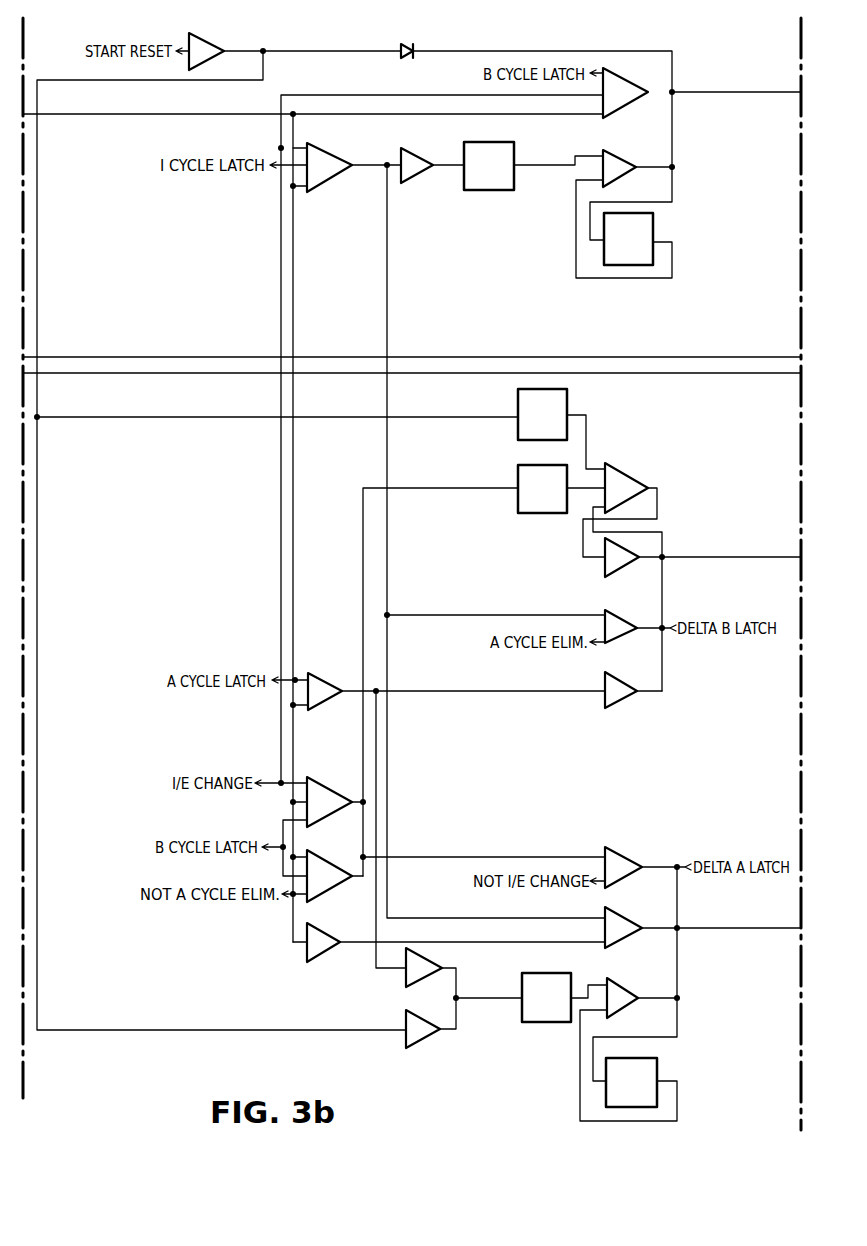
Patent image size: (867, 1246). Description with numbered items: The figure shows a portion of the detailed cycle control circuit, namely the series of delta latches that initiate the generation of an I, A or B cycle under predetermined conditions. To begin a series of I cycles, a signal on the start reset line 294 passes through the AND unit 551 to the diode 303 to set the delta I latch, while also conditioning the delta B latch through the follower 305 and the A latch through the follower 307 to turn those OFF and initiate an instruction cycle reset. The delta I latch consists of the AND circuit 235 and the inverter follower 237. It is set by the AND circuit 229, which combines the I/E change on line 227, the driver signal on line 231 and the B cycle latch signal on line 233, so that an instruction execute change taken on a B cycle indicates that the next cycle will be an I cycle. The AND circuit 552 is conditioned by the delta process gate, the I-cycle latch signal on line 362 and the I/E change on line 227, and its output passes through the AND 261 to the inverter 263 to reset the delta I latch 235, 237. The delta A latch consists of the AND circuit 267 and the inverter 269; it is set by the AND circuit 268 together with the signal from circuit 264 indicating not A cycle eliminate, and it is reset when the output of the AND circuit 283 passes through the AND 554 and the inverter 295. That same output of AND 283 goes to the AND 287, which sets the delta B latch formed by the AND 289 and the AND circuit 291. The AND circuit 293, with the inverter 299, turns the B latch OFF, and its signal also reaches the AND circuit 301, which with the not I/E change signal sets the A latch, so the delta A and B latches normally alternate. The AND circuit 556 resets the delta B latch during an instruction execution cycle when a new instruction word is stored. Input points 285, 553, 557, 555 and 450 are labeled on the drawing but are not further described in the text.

The start reset line 294 is at (181, 50).
The AND unit 551 is at (200, 46).
The diode 303 is at (403, 47).
The B cycle latch line 233 is at (594, 72).
The AND circuit 229 is at (610, 87).
The line 231 is at (190, 116).
The line 227 is at (281, 278).
The line 362 is at (272, 164).
The AND circuit 552 is at (318, 152).
The AND 261 is at (405, 154).
The inverter 263 is at (512, 153).
The AND circuit 235 is at (613, 155).
The inverter follower 237 is at (653, 226).
The follower 305 is at (518, 403).
The inverter 299 is at (518, 480).
The AND circuit 291 is at (616, 481).
The AND 289 is at (620, 565).
The gate 553 is at (610, 616).
The AND 287 is at (614, 685).
The A cycle latch input 285 is at (300, 678).
The AND circuit 283 is at (318, 694).
The I/E change input 557 is at (266, 769).
The AND circuit 556 is at (312, 786).
The B cycle latch input 555 is at (268, 836).
The AND circuit 293 is at (310, 861).
The not A cycle elim input 450 is at (280, 892).
The circuit 264 is at (315, 931).
The AND 554 is at (406, 984).
The follower 307 is at (415, 1042).
The inverter 295 is at (568, 983).
The AND circuit 267 is at (615, 991).
The inverter 269 is at (657, 1066).
The AND circuit 301 is at (616, 859).
The AND circuit 268 is at (616, 921).